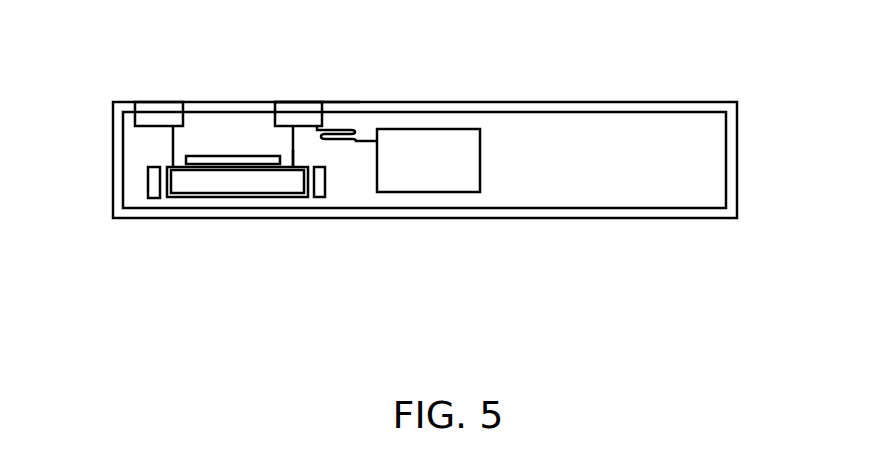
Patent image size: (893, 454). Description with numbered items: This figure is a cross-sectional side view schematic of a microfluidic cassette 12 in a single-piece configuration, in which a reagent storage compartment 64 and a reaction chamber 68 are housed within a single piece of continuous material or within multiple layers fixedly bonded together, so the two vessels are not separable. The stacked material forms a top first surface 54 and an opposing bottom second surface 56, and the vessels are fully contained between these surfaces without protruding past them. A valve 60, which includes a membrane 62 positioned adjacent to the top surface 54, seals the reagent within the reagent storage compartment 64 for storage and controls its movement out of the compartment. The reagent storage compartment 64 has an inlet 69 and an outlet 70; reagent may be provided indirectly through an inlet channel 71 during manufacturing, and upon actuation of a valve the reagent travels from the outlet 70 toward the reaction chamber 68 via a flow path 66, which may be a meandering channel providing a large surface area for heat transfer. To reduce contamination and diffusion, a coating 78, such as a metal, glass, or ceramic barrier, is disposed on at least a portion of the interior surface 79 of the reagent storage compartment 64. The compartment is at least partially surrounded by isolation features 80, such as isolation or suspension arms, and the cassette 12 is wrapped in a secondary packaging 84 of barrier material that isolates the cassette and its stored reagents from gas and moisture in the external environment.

The microfluidic cassette 12 is at (775, 128).
The first surface 54 is at (424, 166).
The second surface 56 is at (370, 208).
The valve 60 is at (320, 103).
The membrane 62 is at (283, 102).
The reagent storage compartment 64 is at (218, 225).
The flow path 66 is at (350, 124).
The reaction chamber 68 is at (447, 145).
The inlet 69 is at (183, 222).
The outlet 70 is at (297, 166).
The inlet channel 71 is at (173, 141).
The coating 78 is at (173, 200).
The interior surface 79 is at (218, 225).
The isolation feature 80 is at (222, 148).
The secondary packaging 84 is at (545, 218).